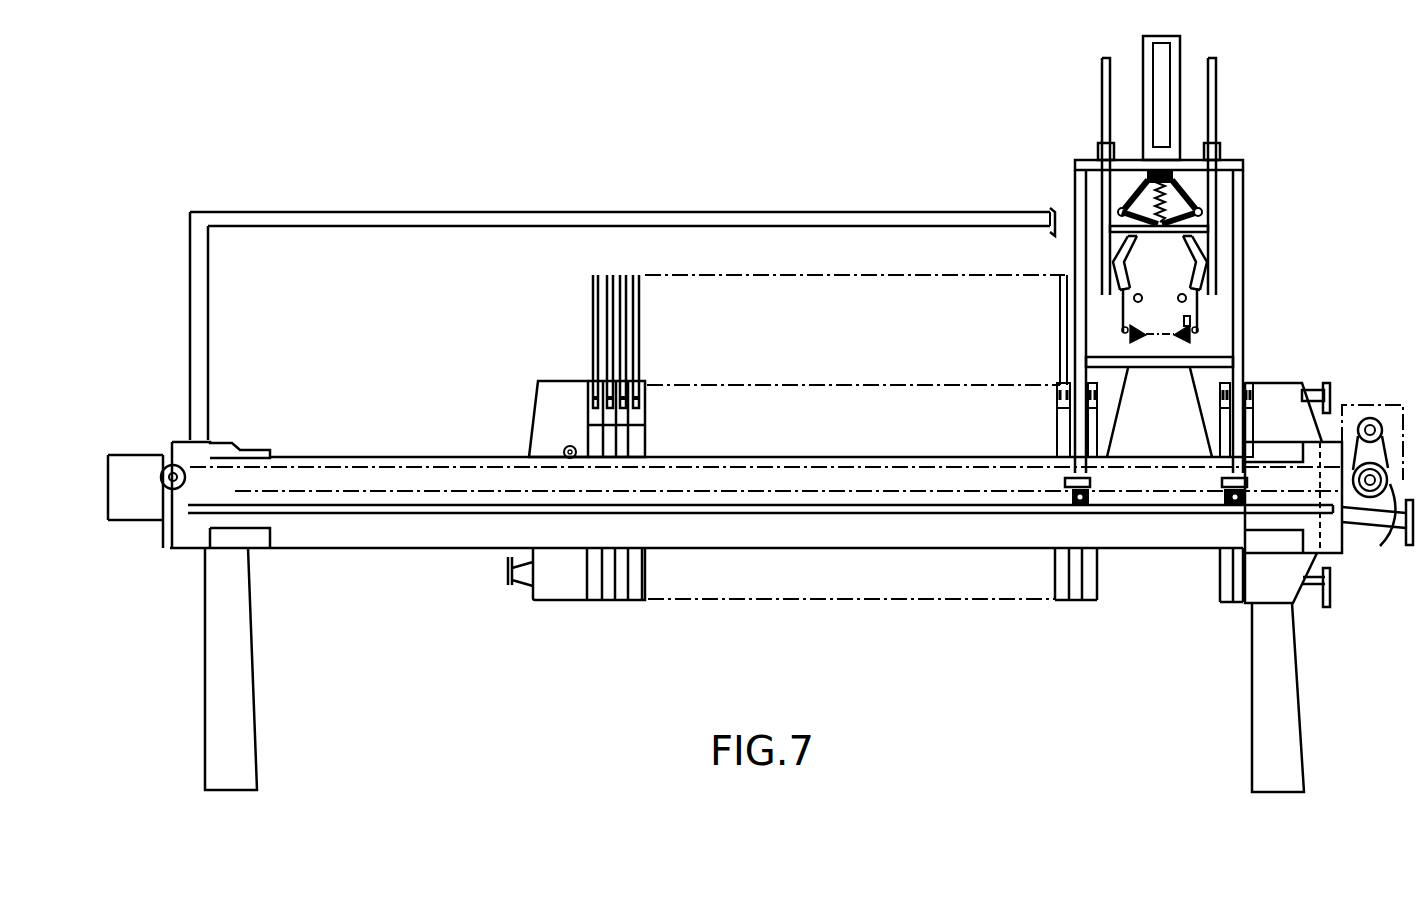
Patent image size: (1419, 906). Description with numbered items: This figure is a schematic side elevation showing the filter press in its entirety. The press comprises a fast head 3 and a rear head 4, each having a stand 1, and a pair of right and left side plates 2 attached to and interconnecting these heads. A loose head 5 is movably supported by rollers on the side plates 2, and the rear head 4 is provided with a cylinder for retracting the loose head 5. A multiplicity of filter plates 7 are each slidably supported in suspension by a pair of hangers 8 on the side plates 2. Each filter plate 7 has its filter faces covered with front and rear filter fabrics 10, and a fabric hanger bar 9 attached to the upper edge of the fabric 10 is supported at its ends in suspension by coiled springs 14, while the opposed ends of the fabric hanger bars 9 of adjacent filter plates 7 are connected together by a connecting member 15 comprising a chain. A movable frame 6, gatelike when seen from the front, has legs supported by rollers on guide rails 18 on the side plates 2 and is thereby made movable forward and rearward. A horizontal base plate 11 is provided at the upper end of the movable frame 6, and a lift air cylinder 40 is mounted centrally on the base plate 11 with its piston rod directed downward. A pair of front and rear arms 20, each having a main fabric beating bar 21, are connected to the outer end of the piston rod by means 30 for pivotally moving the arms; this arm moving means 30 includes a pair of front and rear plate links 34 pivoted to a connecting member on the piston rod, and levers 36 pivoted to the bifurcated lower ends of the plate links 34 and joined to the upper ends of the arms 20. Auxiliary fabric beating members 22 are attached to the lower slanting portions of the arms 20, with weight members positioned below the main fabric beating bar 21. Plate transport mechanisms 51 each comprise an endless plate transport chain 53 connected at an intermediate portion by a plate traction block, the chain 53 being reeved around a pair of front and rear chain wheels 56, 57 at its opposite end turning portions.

The stand 1 is at (205, 690).
The side plate 2 is at (700, 545).
The fast head 3 is at (1283, 400).
The rear head 4 is at (183, 447).
The loose head 5 is at (540, 408).
The movable frame 6 is at (1238, 183).
The filter plate 7 is at (607, 600).
The hanger 8 is at (638, 438).
The fabric hanger bar 9 is at (1195, 342).
The filter fabric 10 is at (1195, 388).
The base plate 11 is at (1127, 147).
The coiled spring 14 is at (1190, 330).
The connecting member 15 is at (1137, 337).
The guide rail 18 is at (840, 514).
The arm 20 is at (1125, 250).
The main fabric beating bar 21 is at (1160, 299).
The auxiliary fabric beating member 22 is at (1118, 328).
The arm moving means 30 is at (1190, 200).
The plate link 34 is at (1130, 195).
The lever 36 is at (1128, 222).
The lift air cylinder 40 is at (1157, 72).
The plate transport mechanism 51 is at (1099, 468).
The plate transport chain 53 is at (383, 493).
The chain wheel 56 is at (1377, 496).
The chain wheel 57 is at (162, 482).